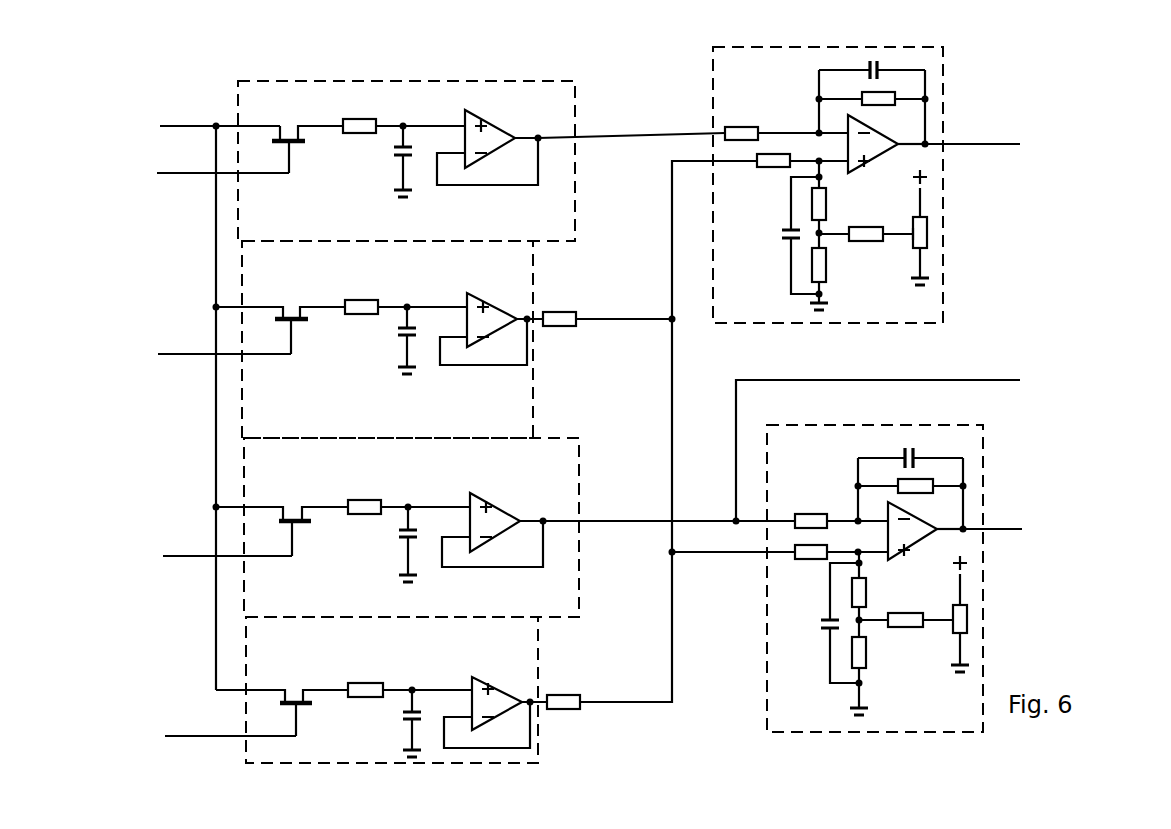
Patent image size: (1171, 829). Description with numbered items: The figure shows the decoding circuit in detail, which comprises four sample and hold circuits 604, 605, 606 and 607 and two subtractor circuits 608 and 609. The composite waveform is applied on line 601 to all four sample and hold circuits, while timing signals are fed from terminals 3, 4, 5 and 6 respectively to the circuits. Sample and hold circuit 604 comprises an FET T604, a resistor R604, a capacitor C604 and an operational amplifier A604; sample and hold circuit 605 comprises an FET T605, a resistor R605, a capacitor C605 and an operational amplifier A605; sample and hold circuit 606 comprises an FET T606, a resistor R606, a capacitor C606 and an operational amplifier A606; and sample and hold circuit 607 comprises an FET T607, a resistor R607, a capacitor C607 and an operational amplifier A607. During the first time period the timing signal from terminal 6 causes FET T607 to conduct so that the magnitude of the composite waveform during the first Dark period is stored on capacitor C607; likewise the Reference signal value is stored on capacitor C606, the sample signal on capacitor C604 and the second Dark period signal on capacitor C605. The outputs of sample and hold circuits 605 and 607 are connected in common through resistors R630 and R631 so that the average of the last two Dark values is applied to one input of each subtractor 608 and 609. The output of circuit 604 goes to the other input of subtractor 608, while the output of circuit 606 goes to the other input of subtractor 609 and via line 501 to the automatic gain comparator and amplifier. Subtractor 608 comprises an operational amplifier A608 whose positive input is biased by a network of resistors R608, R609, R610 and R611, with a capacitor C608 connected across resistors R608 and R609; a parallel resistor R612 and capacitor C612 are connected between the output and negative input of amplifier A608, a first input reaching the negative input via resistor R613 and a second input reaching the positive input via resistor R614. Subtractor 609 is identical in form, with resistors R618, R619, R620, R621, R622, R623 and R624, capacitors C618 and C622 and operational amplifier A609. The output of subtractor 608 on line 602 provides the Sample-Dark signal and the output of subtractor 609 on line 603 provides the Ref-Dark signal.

The line 601 is at (191, 127).
The terminal 3 is at (212, 175).
The terminal 4 is at (214, 355).
The terminal 5 is at (214, 557).
The terminal 6 is at (218, 737).
The sample and hold circuit 604 is at (577, 96).
The sample and hold circuit 605 is at (533, 255).
The sample and hold circuit 606 is at (583, 452).
The sample and hold circuit 607 is at (540, 642).
The subtractor circuit 608 is at (945, 56).
The subtractor circuit 609 is at (985, 432).
The line 501 is at (903, 444).
The line 602 is at (999, 144).
The line 603 is at (1019, 529).
The FET T604 is at (286, 145).
The resistor R604 is at (394, 111).
The capacitor C604 is at (397, 148).
The operational amplifier A604 is at (581, 137).
The FET T605 is at (288, 323).
The resistor R605 is at (396, 292).
The capacitor C605 is at (400, 329).
The operational amplifier A605 is at (495, 301).
The resistor R630 is at (609, 303).
The FET T606 is at (287, 525).
The resistor R606 is at (397, 492).
The capacitor C606 is at (402, 532).
The operational amplifier A606 is at (618, 520).
The FET T607 is at (292, 702).
The resistor R607 is at (401, 673).
The capacitor C607 is at (403, 715).
The operational amplifier A607 is at (497, 685).
The resistor R631 is at (651, 435).
The capacitor C612 is at (868, 62).
The resistor R612 is at (883, 95).
The resistor R613 is at (783, 118).
The resistor R614 is at (757, 157).
The resistor R608 is at (815, 205).
The capacitor C608 is at (785, 233).
The resistor R609 is at (828, 267).
The resistor R610 is at (877, 242).
The resistor R611 is at (927, 225).
The operational amplifier A608 is at (878, 152).
The capacitor C622 is at (909, 448).
The resistor R622 is at (933, 482).
The resistor R623 is at (830, 506).
The resistor R624 is at (795, 556).
The resistor R618 is at (852, 592).
The capacitor C618 is at (820, 625).
The resistor R619 is at (852, 653).
The resistor R620 is at (906, 627).
The resistor R621 is at (967, 620).
The operational amplifier A609 is at (920, 543).